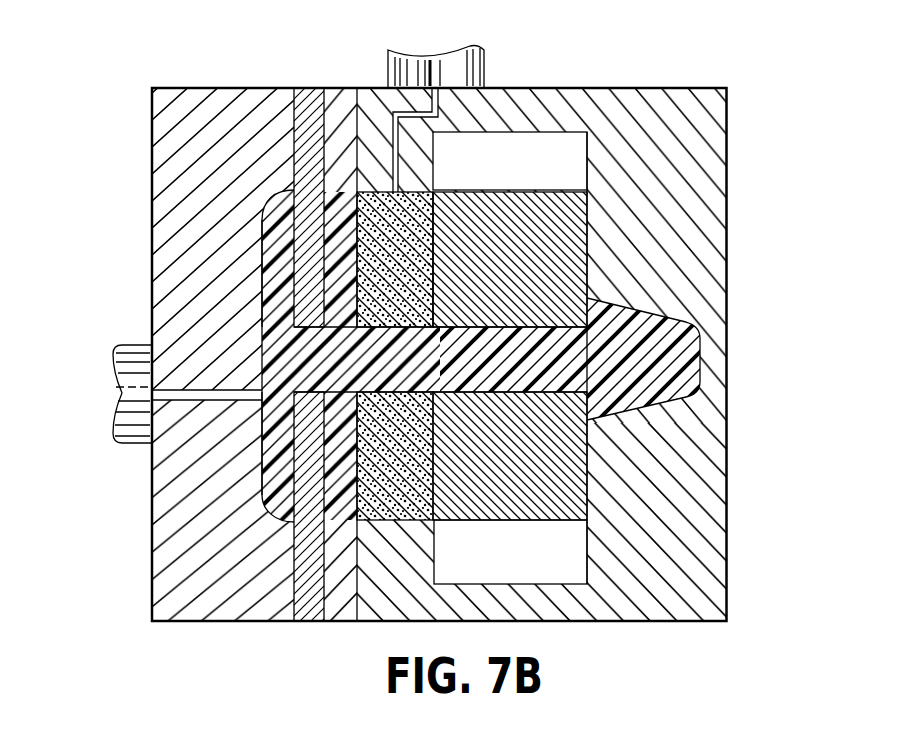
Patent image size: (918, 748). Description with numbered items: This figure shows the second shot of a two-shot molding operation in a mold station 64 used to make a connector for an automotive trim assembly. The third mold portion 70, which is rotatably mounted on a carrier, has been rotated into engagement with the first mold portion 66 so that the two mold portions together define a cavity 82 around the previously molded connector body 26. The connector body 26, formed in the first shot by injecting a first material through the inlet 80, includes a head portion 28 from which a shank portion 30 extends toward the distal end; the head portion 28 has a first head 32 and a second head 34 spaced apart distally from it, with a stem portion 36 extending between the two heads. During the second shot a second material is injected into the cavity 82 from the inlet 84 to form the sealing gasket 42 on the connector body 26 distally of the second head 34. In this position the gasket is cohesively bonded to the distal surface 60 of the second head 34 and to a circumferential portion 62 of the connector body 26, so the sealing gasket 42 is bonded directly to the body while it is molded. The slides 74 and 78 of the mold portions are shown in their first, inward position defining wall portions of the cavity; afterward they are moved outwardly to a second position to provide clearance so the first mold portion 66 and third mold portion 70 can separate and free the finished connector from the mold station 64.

The connector body 26 is at (395, 412).
The head portion 28 is at (236, 307).
The shank portion 30 is at (519, 323).
The first head 32 is at (276, 196).
The second head 34 is at (340, 190).
The stem portion 36 is at (294, 413).
The sealing gasket 42 is at (400, 260).
The distal surface 60 is at (363, 222).
The circumferential portion 62 is at (403, 324).
The mold station 64 is at (585, 48).
The first mold portion 66 is at (152, 198).
The third mold portion 70 is at (728, 141).
The slide 74 is at (310, 88).
The slide 78 is at (510, 138).
The inlet 80 is at (112, 378).
The cavity 82 is at (420, 472).
The inlet 84 is at (450, 48).